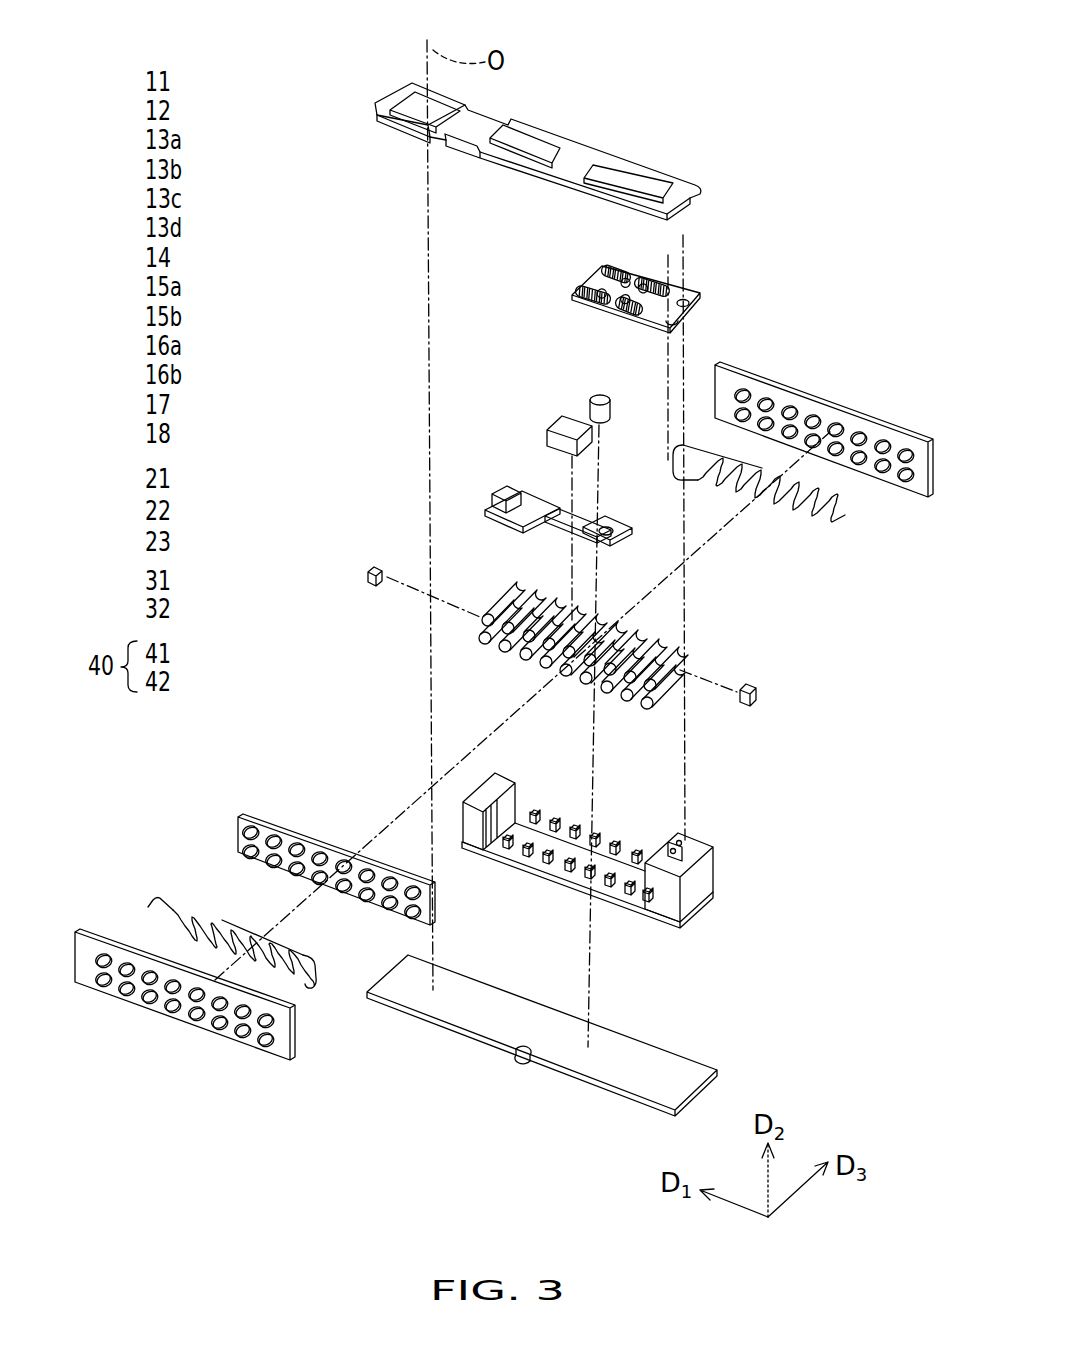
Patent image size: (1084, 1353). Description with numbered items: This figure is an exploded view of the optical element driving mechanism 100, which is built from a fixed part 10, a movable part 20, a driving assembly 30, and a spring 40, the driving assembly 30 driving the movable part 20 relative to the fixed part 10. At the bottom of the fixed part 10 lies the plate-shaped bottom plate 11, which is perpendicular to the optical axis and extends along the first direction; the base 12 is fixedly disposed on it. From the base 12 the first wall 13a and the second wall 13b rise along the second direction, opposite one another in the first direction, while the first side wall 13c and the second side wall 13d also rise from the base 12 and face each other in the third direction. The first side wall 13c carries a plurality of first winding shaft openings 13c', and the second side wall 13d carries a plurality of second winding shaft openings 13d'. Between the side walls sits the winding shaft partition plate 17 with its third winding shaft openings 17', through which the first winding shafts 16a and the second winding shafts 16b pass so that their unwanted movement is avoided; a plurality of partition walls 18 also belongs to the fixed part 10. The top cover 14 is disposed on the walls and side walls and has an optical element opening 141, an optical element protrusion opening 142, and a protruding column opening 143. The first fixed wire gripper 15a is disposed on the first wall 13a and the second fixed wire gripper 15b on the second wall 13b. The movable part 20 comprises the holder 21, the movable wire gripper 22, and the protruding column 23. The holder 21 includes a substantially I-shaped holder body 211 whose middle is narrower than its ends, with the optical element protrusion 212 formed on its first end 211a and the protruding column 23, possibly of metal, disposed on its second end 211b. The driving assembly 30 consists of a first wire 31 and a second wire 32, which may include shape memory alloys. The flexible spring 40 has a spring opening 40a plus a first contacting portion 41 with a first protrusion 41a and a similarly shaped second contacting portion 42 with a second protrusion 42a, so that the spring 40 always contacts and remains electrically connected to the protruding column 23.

The optical element driving mechanism 100 is at (222, 26).
The fixed part 10 is at (137, 69).
The bottom plate 11 is at (665, 1066).
The base 12 is at (648, 930).
The first wall 13a is at (700, 886).
The second wall 13b is at (500, 783).
The first side wall 13c is at (178, 967).
The first winding shaft openings 13c' is at (104, 1019).
The second side wall 13d is at (824, 405).
The second winding shaft openings 13d' is at (796, 355).
The top cover 14 is at (575, 160).
The optical element opening 141 is at (412, 105).
The optical element protrusion opening 142 is at (523, 143).
The protruding column opening 143 is at (622, 183).
The first fixed wire gripper 15a is at (752, 687).
The second fixed wire gripper 15b is at (366, 575).
The first winding shafts 16a is at (710, 632).
The second winding shafts 16b is at (652, 710).
The winding shaft partition plate 17 is at (302, 842).
The third winding shaft openings 17' is at (250, 794).
The partition walls 18 is at (651, 836).
The movable part 20 is at (137, 466).
The holder 21 is at (547, 500).
The holder body 211 is at (562, 522).
The first end 211a is at (497, 520).
The second end 211b is at (635, 512).
The optical element protrusion 212 is at (500, 491).
The movable wire gripper 22 is at (567, 428).
The protruding column 23 is at (611, 404).
The driving assembly 30 is at (137, 568).
The first wire 31 is at (842, 524).
The second wire 32 is at (316, 986).
The spring 40 is at (692, 294).
The spring opening 40a is at (640, 352).
The first contacting portion 41 is at (623, 271).
The first protrusion 41a is at (605, 268).
The second contacting portion 42 is at (593, 301).
The second protrusion 42a is at (580, 291).